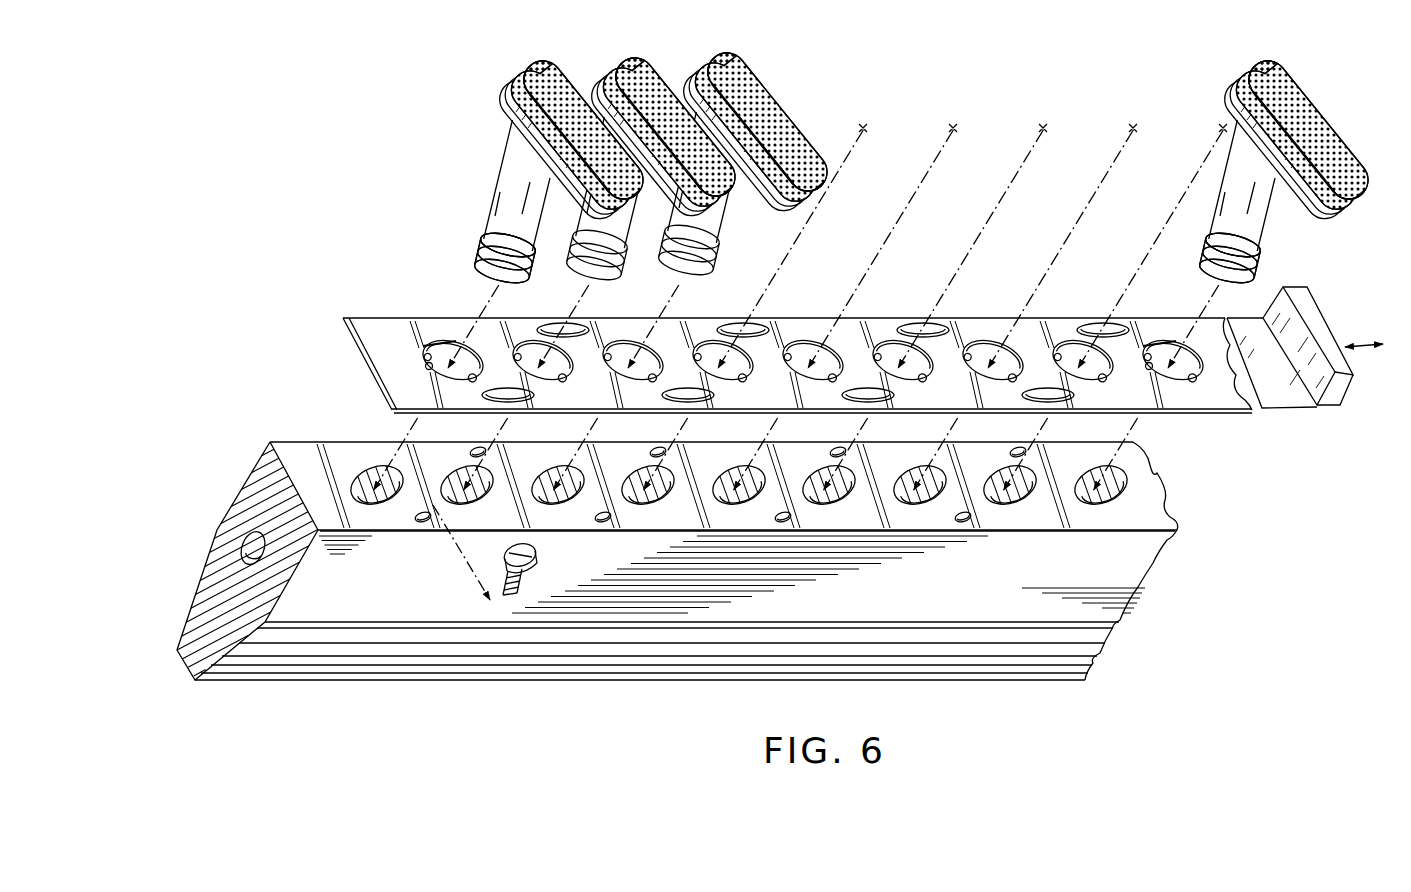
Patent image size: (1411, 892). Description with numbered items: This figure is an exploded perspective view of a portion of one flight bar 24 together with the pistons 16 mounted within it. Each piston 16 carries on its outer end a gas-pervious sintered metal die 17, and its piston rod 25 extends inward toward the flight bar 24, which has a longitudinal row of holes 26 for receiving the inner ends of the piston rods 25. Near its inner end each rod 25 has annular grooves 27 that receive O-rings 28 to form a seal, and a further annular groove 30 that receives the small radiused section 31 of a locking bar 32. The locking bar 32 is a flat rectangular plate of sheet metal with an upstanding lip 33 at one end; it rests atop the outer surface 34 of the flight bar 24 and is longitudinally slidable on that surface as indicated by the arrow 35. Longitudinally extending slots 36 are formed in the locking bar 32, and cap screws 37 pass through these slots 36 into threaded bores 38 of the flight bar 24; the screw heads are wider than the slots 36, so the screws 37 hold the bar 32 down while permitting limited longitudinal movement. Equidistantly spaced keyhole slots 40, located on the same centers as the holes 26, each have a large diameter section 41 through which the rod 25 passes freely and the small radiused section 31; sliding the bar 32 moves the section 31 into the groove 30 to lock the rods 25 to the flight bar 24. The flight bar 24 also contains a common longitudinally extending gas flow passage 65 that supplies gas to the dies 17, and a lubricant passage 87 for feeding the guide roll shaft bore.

The piston 16 is at (503, 120).
The sintered metal die 17 is at (540, 72).
The flight bar 24 is at (706, 543).
The piston rod 25 is at (507, 213).
The holes 26 is at (355, 468).
The annular grooves 27 is at (482, 268).
The O-rings 28 is at (867, 258).
The annular groove 30 is at (482, 236).
The small radiused section 31 is at (470, 347).
The locking bar 32 is at (770, 360).
The upstanding lip 33 is at (1303, 340).
The outer surface 34 is at (1080, 522).
The arrow 35 is at (1372, 348).
The slots 36 is at (575, 323).
The cap screws 37 is at (536, 557).
The threaded bores 38 is at (423, 523).
The keyhole slots 40 is at (445, 338).
The large diameter section 41 is at (432, 370).
The gas flow passage 65 is at (248, 538).
The passage 87 is at (240, 578).